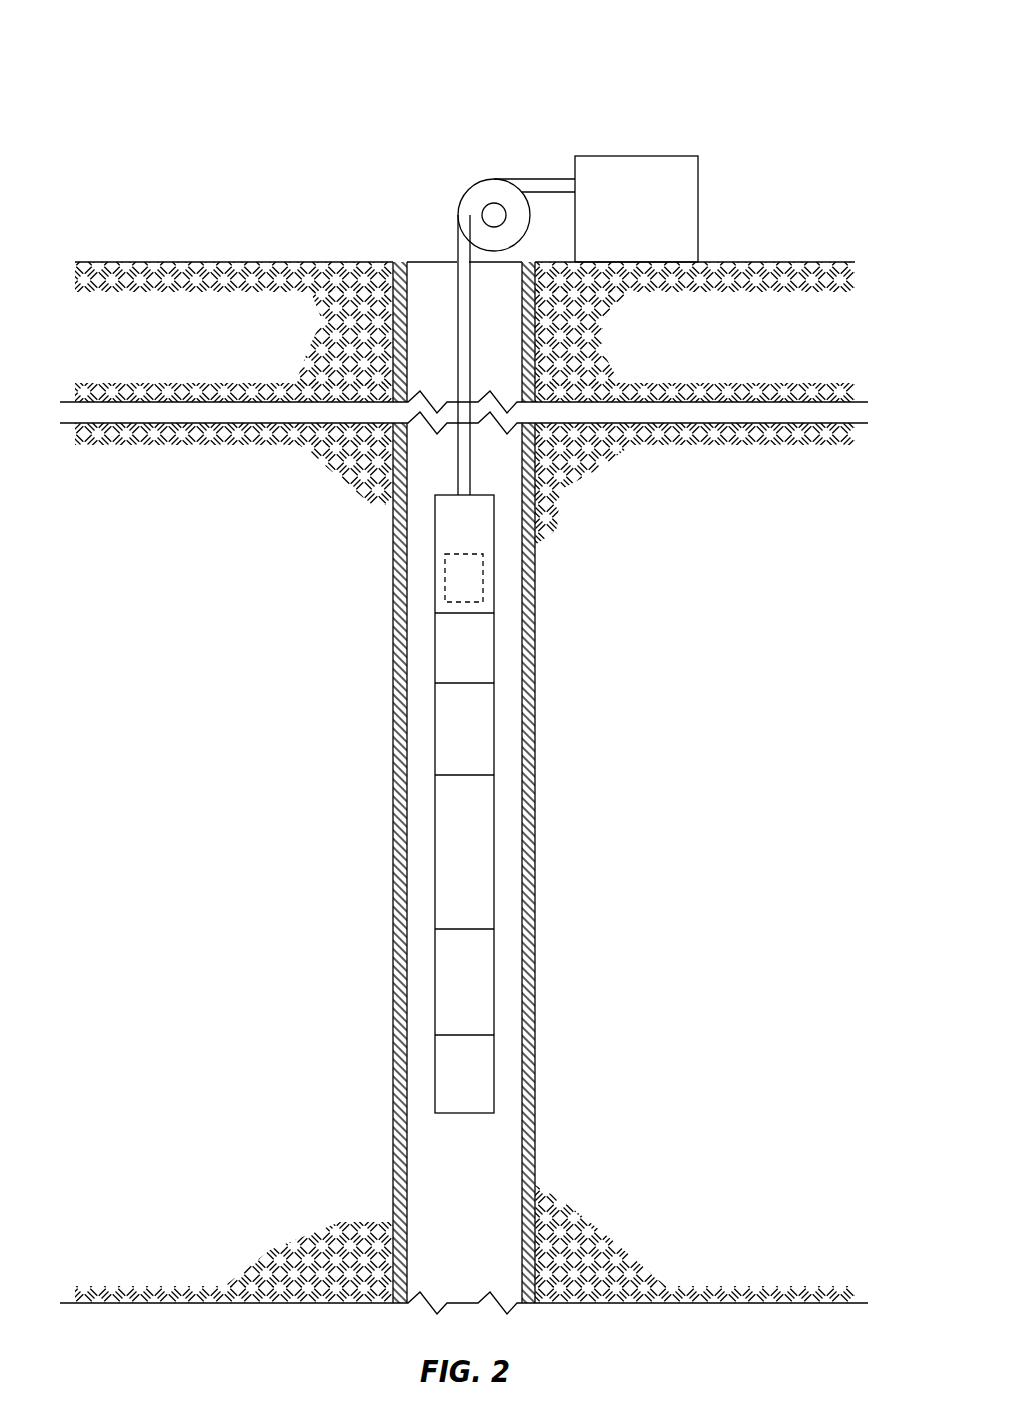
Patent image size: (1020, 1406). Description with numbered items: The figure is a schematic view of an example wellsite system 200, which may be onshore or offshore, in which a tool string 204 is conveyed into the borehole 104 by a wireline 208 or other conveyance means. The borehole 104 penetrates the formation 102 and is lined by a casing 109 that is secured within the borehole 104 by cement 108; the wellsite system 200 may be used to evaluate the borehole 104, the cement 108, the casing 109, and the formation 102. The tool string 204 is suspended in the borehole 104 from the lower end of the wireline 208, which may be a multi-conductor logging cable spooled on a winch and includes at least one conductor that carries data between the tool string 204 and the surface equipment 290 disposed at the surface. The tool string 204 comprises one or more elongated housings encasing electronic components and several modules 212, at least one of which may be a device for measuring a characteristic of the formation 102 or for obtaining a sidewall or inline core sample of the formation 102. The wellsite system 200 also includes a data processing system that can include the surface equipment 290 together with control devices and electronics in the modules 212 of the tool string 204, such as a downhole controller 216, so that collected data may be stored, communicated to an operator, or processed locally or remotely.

The wellsite system 200 is at (265, 78).
The formation 102 is at (331, 391).
The borehole 104 is at (422, 290).
The cement 108 is at (396, 676).
The casing 109 is at (396, 759).
The wireline 208 is at (533, 178).
The surface equipment 290 is at (699, 210).
The tool string 204 is at (470, 1143).
The modules 212 is at (435, 556).
The downhole controller 216 is at (483, 578).